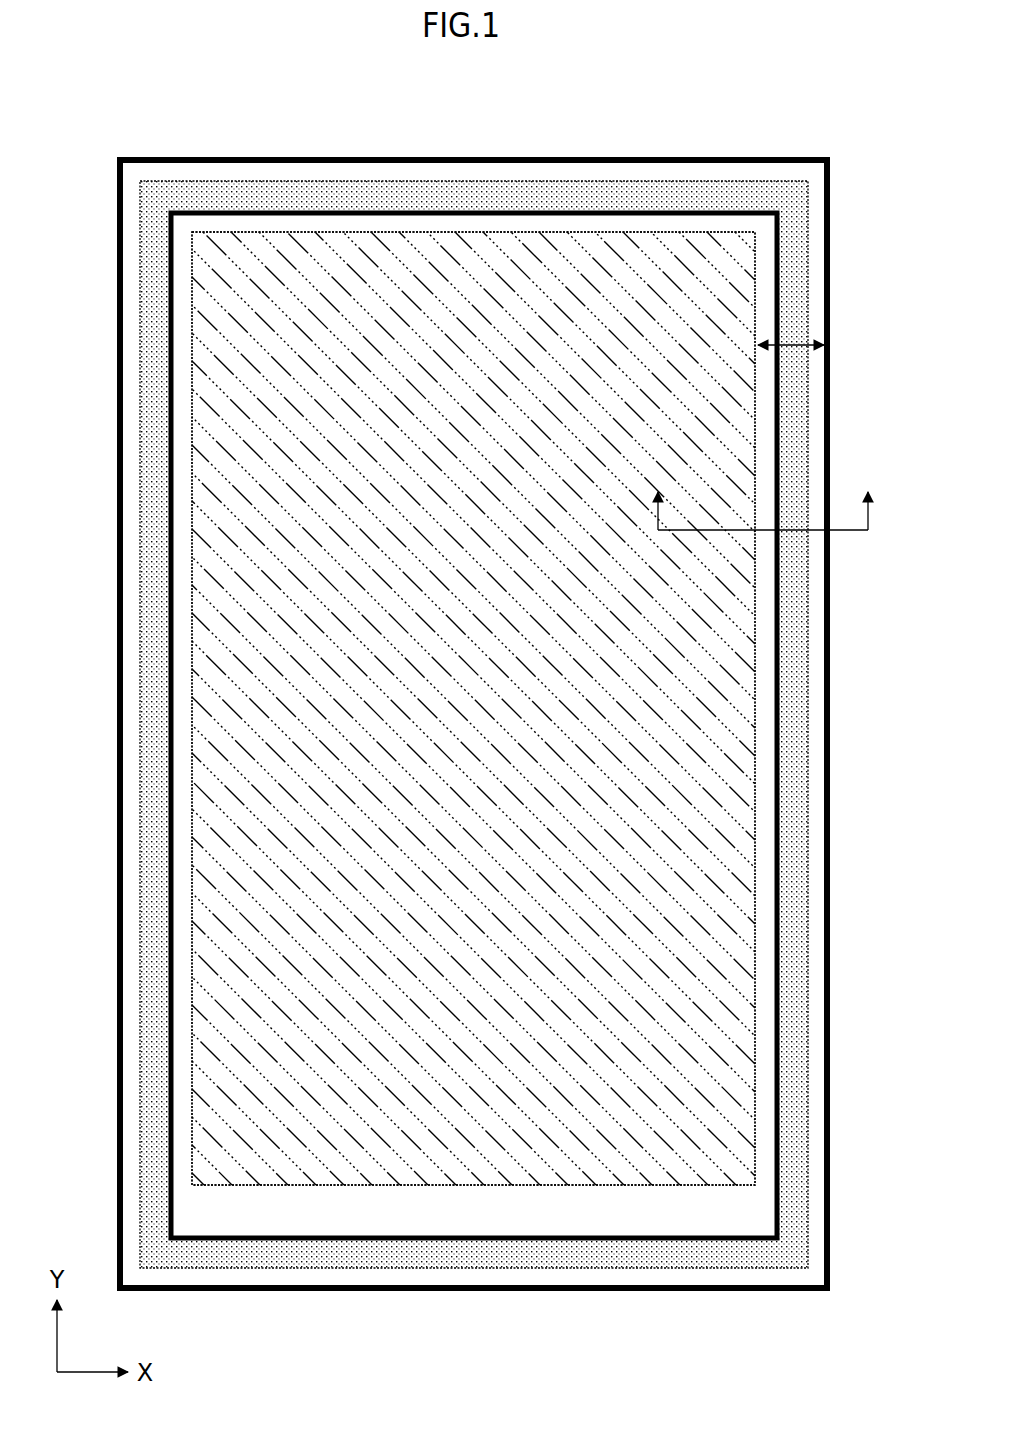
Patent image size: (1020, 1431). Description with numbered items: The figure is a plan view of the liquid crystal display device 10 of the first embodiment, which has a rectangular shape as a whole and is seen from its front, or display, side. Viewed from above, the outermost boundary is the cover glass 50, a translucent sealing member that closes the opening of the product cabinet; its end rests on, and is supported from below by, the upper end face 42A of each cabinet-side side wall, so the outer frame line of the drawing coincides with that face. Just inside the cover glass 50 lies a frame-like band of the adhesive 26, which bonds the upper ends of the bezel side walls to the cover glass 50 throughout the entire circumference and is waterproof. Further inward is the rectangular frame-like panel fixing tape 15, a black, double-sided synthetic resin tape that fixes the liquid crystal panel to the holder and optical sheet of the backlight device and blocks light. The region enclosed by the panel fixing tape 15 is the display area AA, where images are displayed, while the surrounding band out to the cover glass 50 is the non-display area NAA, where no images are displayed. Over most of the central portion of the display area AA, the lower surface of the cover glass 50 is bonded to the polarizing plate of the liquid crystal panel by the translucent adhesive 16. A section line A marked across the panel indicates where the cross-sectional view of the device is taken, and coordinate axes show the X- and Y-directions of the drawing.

The liquid crystal display device 10 is at (53, 224).
The panel fixing tape 15 is at (387, 212).
The adhesive 16 is at (463, 258).
The adhesive 26 is at (542, 195).
The upper end face 42A is at (620, 168).
The cover glass 50 is at (831, 718).
The non-display area NAA is at (795, 342).
The display area AA is at (708, 418).
The section line A- A is at (763, 496).